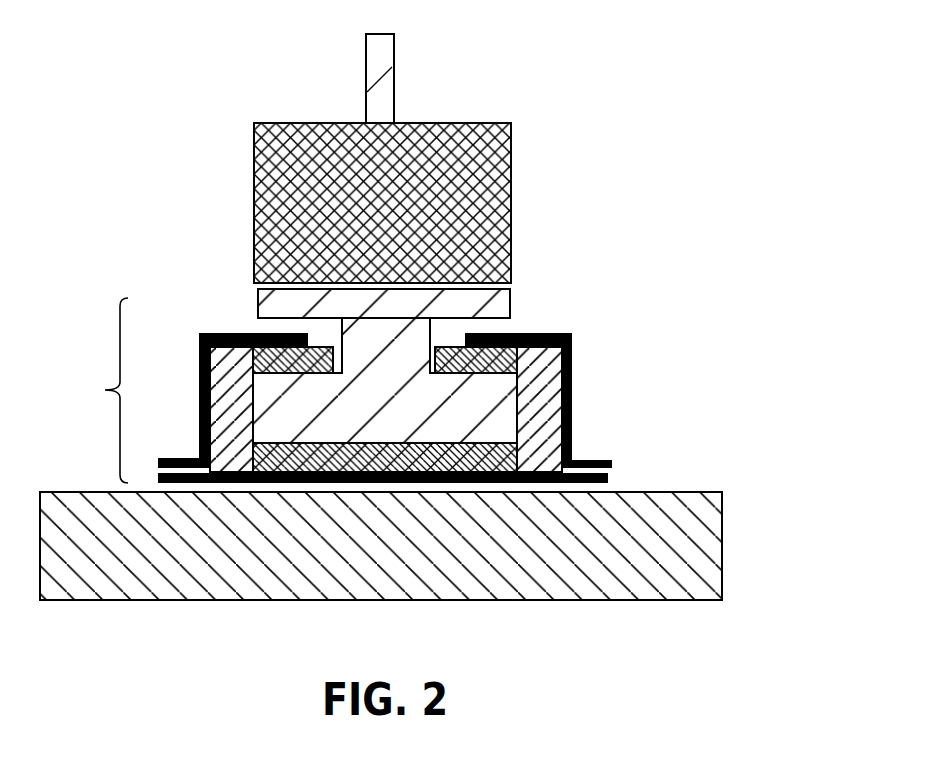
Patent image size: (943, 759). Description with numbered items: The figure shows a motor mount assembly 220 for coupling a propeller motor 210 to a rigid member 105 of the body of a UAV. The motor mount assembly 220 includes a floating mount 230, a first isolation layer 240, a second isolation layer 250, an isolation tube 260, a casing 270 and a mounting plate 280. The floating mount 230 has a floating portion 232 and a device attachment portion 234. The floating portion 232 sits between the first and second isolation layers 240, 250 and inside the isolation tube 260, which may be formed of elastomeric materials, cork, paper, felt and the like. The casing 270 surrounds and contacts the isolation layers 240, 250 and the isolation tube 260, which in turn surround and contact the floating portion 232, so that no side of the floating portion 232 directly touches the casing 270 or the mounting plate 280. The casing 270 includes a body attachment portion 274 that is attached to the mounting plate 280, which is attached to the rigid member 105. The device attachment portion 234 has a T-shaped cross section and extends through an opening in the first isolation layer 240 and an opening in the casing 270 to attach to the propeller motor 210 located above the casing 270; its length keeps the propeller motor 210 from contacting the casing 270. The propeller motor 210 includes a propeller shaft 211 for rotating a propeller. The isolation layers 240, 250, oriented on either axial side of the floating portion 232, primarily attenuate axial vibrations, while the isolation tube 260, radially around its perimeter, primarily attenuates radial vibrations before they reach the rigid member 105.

The rigid member 105 is at (718, 550).
The propeller motor 210 is at (512, 158).
The propeller shaft 211 is at (394, 51).
The motor mount assembly 220 is at (94, 390).
The floating mount 230 is at (498, 395).
The floating portion 232 is at (288, 407).
The device attachment portion 234 is at (258, 300).
The first isolation layer 240 is at (545, 333).
The second isolation layer 250 is at (500, 456).
The isolation tube 260 is at (538, 423).
The casing 270 is at (500, 358).
The body attachment portion 274 is at (180, 458).
The mounting plate 280 is at (610, 481).